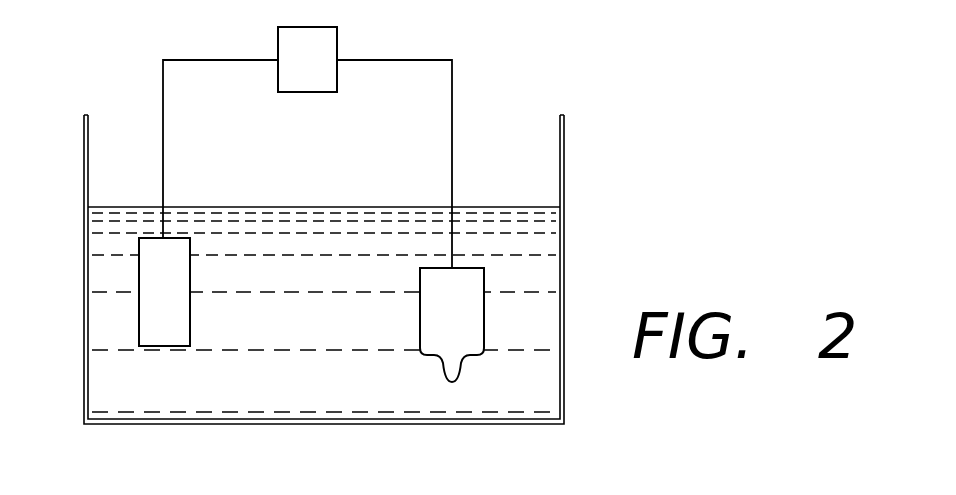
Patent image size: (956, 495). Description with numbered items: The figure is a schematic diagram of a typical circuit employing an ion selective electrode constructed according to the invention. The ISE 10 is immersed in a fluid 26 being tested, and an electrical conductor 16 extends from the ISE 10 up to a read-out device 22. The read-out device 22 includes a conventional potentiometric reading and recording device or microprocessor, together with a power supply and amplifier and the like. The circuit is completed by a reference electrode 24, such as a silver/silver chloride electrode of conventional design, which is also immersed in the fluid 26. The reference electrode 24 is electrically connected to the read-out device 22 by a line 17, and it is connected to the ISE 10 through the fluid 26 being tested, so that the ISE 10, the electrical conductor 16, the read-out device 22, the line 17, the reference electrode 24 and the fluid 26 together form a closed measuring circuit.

The ion selective electrode (ISE) 10 is at (190, 308).
The electrical conductor 16 is at (163, 110).
The line 17 is at (452, 110).
The read-out device 22 is at (337, 77).
The reference electrode 24 is at (420, 318).
The fluid being tested 26 is at (332, 393).